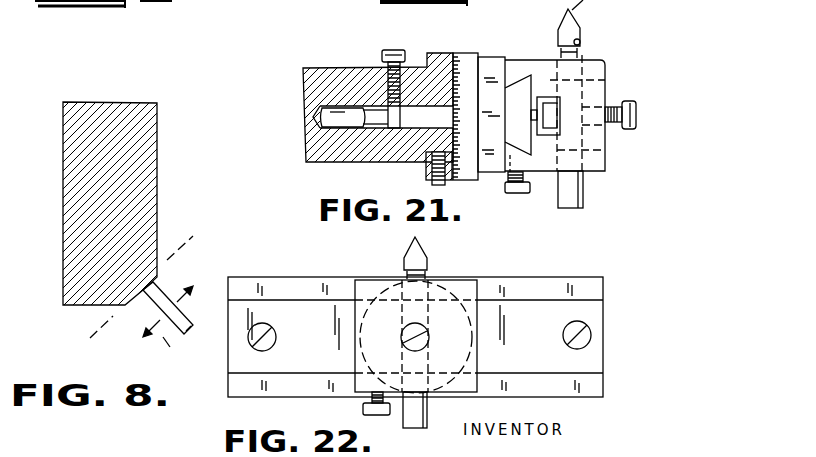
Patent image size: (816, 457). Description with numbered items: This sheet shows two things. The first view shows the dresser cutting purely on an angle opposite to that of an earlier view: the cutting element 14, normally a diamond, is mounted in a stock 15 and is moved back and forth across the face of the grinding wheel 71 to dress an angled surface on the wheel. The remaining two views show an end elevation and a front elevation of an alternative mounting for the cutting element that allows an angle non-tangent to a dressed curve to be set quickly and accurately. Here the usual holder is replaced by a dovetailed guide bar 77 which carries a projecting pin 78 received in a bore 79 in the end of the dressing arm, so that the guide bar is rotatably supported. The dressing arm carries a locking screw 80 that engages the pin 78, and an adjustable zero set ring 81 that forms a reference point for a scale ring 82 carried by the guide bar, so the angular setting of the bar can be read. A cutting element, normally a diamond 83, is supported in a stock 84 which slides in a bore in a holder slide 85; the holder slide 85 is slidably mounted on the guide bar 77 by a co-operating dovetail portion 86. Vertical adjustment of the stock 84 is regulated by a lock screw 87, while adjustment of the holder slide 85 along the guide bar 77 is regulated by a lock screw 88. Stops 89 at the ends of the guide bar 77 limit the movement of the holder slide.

In FIG. 8, the cutting element 14 is at (152, 283).
In FIG. 8, the stock 15 is at (159, 351).
In FIG. 8, the grinding wheel 71 is at (153, 158).
In FIG. 21, the dovetailed guide bar 77 is at (490, 57).
In FIG. 22, the dovetailed guide bar 77 is at (280, 285).
In FIG. 21, the projecting pin 78 is at (372, 107).
In FIG. 21, the bore 79 is at (313, 116).
In FIG. 21, the locking screw 80 is at (388, 50).
In FIG. 21, the adjustable zero set ring 81 is at (437, 53).
In FIG. 21, the scale ring 82 is at (469, 53).
In FIG. 22, the scale ring 82 is at (398, 280).
In FIG. 22, the diamond 83 is at (413, 240).
In FIG. 21, the stock 84 is at (580, 40).
In FIG. 22, the stock 84 is at (428, 262).
In FIG. 21, the holder slide 85 is at (608, 80).
In FIG. 22, the holder slide 85 is at (470, 278).
In FIG. 21, the co-operating dovetail portion 86 is at (520, 75).
In FIG. 21, the lock screw 87 is at (630, 103).
In FIG. 22, the lock screw 87 is at (418, 342).
In FIG. 21, the lock screw 88 is at (509, 194).
In FIG. 22, the lock screw 88 is at (385, 416).
In FIG. 21, the stops 89 is at (558, 133).
In FIG. 22, the stops 89 is at (250, 348).